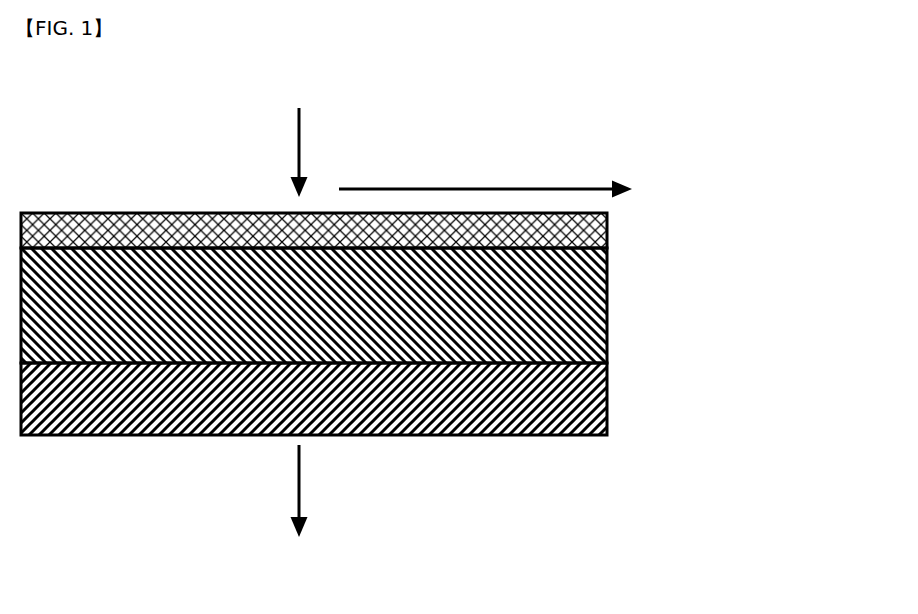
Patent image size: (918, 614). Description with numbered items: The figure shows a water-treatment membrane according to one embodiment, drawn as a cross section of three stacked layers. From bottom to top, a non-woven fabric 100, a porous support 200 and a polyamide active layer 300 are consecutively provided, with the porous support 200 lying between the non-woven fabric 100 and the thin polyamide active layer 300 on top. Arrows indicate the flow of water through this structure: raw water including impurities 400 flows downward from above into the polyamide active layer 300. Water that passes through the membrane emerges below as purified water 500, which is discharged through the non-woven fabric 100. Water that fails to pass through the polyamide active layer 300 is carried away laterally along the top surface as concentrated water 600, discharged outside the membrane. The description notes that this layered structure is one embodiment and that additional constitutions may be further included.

The non-woven fabric 100 is at (588, 407).
The porous support 200 is at (590, 328).
The polyamide active layer 300 is at (588, 233).
The raw water including impurities 400 is at (298, 131).
The purified water 500 is at (298, 512).
The concentrated water 600 is at (485, 167).